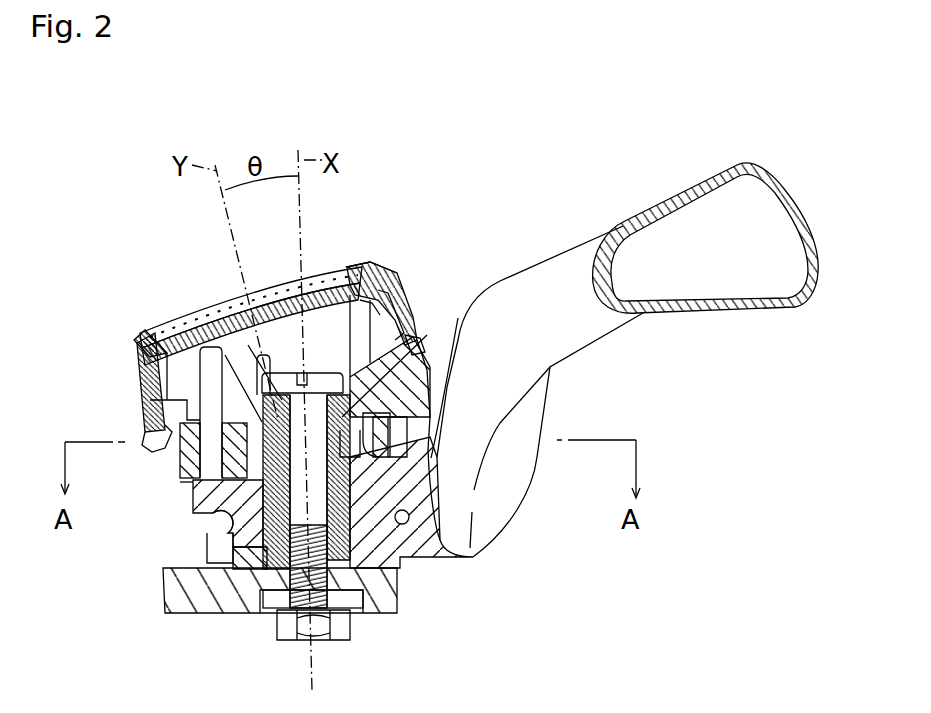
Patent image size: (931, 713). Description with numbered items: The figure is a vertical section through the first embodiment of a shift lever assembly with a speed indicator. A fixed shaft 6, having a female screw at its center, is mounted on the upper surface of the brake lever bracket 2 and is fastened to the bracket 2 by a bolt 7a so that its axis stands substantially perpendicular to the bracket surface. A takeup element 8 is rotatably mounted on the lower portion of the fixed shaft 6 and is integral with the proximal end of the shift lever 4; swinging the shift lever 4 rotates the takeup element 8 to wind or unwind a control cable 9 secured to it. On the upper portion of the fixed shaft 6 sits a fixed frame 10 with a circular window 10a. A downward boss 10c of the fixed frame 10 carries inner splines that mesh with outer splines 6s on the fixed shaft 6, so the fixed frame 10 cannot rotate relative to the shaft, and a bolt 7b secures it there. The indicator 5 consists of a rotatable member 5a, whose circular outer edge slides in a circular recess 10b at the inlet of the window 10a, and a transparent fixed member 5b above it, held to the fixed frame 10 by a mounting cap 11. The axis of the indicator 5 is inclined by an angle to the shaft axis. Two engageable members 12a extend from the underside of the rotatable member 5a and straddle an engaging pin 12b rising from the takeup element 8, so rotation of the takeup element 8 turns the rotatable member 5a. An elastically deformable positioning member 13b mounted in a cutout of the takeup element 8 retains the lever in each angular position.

The brake lever bracket 2 is at (213, 613).
The shift lever 4 is at (600, 332).
The indicator 5 is at (213, 301).
The rotatable member 5a is at (197, 322).
The fixed member 5b is at (175, 333).
The fixed shaft 6 is at (413, 547).
The outer splines 6s is at (177, 482).
The bolt 7a is at (350, 623).
The bolt 7b is at (258, 355).
The takeup element 8 is at (207, 545).
The control cable 9 is at (215, 521).
The fixed frame 10 is at (390, 300).
The circular window 10a is at (330, 333).
The circular recess 10b is at (137, 345).
The boss 10c is at (417, 340).
The mounting cap 11 is at (397, 268).
The engageable members 12a is at (200, 373).
The engaging pin 12b is at (200, 392).
The positioning member 13b is at (177, 457).